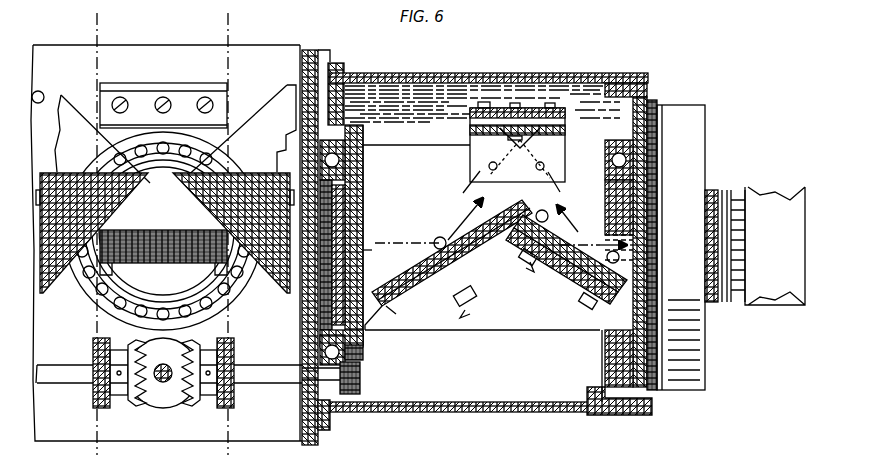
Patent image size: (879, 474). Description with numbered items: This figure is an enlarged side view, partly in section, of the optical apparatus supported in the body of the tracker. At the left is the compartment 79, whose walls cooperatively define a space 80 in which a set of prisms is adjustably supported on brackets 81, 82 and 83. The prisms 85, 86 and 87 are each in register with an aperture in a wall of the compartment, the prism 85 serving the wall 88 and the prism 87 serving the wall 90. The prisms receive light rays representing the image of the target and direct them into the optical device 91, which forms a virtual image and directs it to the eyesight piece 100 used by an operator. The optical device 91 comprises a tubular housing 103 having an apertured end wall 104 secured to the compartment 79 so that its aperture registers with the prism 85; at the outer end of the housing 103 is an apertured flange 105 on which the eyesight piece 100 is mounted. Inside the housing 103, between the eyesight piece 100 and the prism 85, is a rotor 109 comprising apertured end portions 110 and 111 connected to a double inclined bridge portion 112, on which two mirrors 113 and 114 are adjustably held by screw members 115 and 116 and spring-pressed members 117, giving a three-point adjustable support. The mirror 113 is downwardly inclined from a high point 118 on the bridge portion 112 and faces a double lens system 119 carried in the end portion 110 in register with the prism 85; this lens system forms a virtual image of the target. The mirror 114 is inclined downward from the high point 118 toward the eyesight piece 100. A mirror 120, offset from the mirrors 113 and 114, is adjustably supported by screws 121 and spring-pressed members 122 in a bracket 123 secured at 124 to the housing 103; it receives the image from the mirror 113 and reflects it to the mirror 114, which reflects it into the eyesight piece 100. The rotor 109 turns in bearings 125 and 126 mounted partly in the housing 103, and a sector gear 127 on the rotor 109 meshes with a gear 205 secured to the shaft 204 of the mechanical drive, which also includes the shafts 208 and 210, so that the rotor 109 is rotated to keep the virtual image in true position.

The compartment 79 is at (310, 52).
The space 80 is at (250, 52).
The bracket 81 is at (258, 115).
The bracket 82 is at (68, 110).
The bracket 83 is at (180, 90).
The prism 85 is at (255, 176).
The prism 86 is at (68, 175).
The prism 87 is at (205, 262).
The wall 88 is at (300, 421).
The wall 90 is at (126, 47).
The optical device 91 is at (482, 68).
The eyesight piece 100 is at (740, 190).
The tubular housing 103 is at (498, 74).
The apertured end wall 104 is at (340, 78).
The apertured flange 105 is at (690, 104).
The rotor 109 is at (542, 268).
The apertured end portion 110 is at (363, 340).
The apertured end portion 111 is at (632, 300).
The double inclined bridge portion 112 is at (396, 313).
The mirror 113 is at (442, 268).
The mirror 114 is at (565, 285).
The screw member 115 is at (466, 310).
The screw member 116 is at (522, 262).
The spring-pressed member 117 is at (438, 238).
The high point 118 is at (530, 270).
The double lens system 119 is at (365, 258).
The mirror 120 is at (548, 135).
The screw 121 is at (520, 106).
The spring-pressed member 122 is at (508, 140).
The bracket 123 is at (475, 108).
The securing point 124 is at (488, 167).
The bearing 125 is at (365, 163).
The bearing 126 is at (650, 157).
The sector gear 127 is at (363, 357).
The shaft 204 is at (280, 370).
The gear 205 is at (360, 378).
The shaft 208 is at (163, 382).
The shaft 210 is at (68, 368).